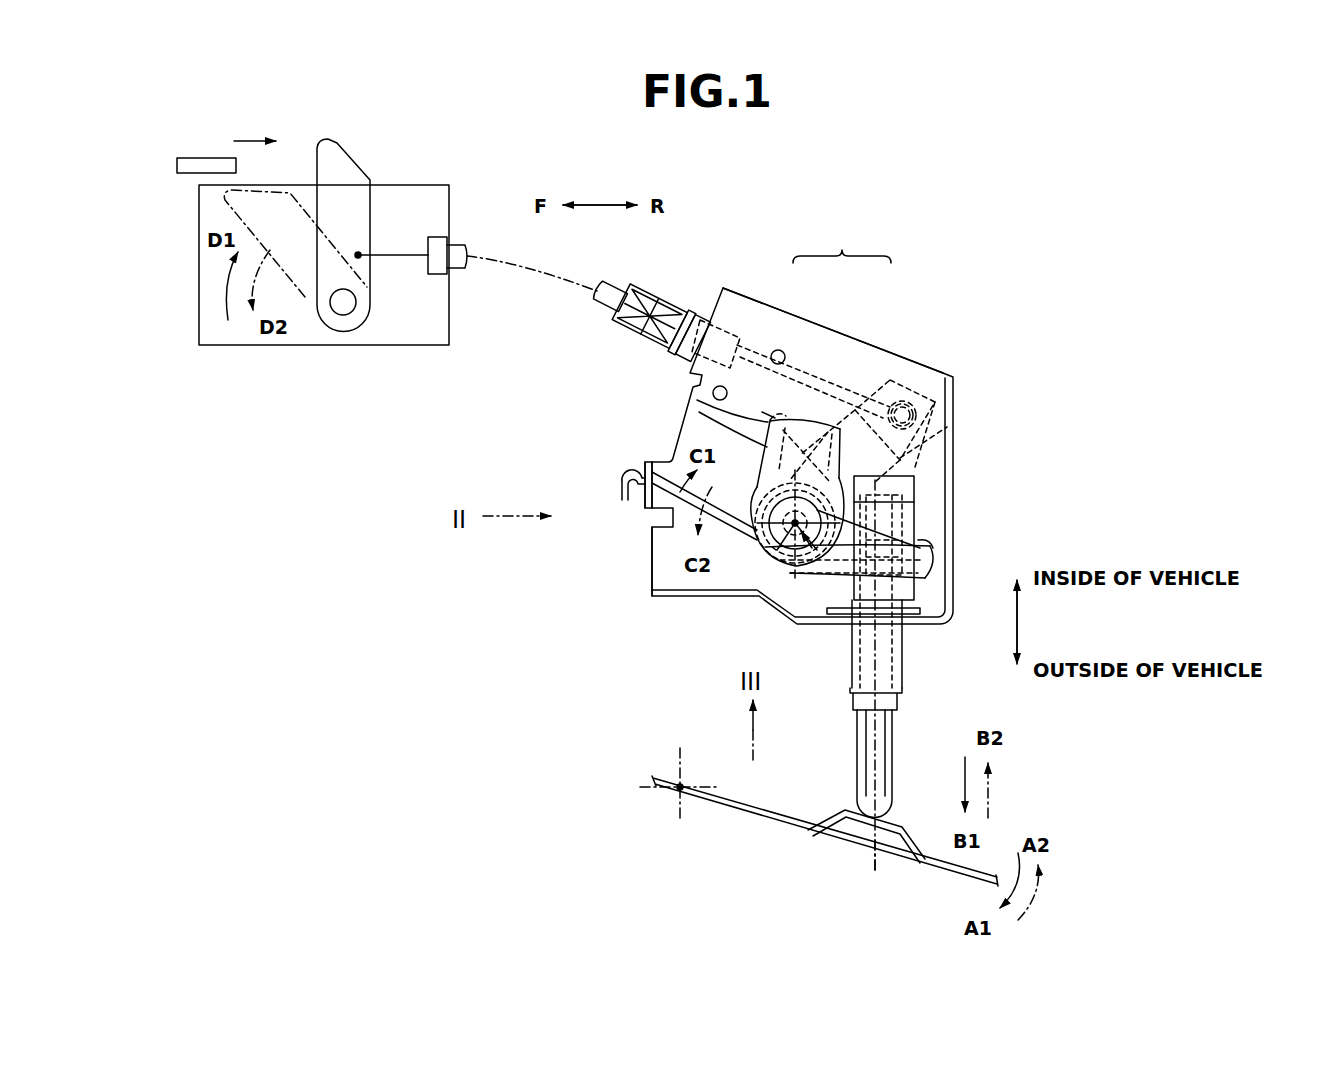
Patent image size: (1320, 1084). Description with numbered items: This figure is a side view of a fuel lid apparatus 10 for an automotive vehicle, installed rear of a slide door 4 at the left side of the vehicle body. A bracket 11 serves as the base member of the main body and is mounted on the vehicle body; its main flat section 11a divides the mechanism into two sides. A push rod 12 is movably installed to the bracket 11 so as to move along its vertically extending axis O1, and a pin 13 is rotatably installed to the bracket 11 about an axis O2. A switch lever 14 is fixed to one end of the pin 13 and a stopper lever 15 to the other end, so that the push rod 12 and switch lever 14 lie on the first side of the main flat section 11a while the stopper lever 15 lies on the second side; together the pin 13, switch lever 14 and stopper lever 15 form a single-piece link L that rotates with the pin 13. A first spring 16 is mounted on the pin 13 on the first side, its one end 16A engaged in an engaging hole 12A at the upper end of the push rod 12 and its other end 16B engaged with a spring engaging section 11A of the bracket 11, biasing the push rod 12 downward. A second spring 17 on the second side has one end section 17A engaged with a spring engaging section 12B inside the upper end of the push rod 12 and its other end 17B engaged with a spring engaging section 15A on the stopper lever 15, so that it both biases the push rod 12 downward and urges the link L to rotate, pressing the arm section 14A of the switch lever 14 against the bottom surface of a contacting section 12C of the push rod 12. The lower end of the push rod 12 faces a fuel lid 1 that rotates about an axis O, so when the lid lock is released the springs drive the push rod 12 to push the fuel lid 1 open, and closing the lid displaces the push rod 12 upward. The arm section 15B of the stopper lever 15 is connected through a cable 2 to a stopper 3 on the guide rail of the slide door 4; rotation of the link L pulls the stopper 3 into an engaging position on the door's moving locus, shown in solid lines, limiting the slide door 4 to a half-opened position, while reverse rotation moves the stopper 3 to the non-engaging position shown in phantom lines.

The fuel lid 1 is at (767, 824).
The cable 2 is at (565, 280).
The stopper 3 is at (337, 158).
The slide door 4 is at (190, 168).
The fuel lid apparatus 10 is at (628, 600).
The bracket 11 is at (932, 366).
The main flat section 11a is at (758, 305).
The spring engaging section 11A is at (645, 462).
The push rod 12 is at (895, 766).
The engaging hole 12A is at (922, 527).
The spring engaging section 12B is at (900, 592).
The contacting section 12C is at (822, 585).
The pin 13 is at (768, 557).
The switch lever 14 is at (823, 411).
The arm section 14A is at (903, 560).
The stopper lever 15 is at (877, 376).
The spring engaging section 15A is at (768, 410).
The arm section 15B is at (900, 382).
The first spring 16 is at (745, 535).
The one end of first spring 16A is at (930, 545).
The other end of first spring 16B is at (622, 487).
The second spring 17 is at (752, 585).
The one end section of second spring 17A is at (948, 604).
The other end of second spring 17B is at (765, 412).
The link L is at (842, 243).
The axis O is at (673, 776).
The axis O1 is at (867, 858).
The axis O2 is at (799, 532).